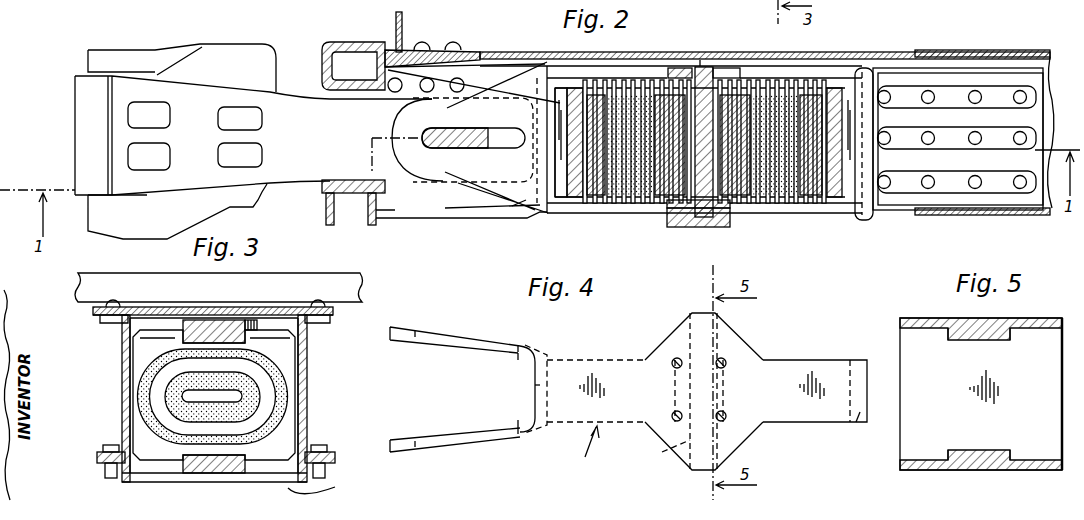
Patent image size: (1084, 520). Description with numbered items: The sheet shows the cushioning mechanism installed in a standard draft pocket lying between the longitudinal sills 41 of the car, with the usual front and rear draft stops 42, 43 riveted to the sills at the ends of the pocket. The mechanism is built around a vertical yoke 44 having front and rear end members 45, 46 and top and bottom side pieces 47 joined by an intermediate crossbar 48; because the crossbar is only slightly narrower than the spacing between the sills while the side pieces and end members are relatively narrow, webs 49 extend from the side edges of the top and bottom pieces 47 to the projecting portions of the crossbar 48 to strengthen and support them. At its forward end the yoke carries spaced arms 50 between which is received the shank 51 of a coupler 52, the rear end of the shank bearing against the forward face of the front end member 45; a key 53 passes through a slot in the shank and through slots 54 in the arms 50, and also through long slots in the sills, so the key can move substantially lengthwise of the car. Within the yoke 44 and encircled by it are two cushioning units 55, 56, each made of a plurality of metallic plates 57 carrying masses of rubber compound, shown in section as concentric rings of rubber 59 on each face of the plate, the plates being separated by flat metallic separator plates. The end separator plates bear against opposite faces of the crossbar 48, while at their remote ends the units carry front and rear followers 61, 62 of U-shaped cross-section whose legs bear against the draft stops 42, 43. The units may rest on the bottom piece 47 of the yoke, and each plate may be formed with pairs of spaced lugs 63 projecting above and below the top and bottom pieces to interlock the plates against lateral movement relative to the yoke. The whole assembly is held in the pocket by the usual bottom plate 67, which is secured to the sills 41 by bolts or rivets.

In FIG. 2, the longitudinal sills 41 is at (1045, 96).
In FIG. 3, the longitudinal sills 41 is at (122, 414).
In FIG. 2, the front draft stop 42 is at (547, 60).
In FIG. 2, the rear draft stop 43 is at (864, 72).
In FIG. 2, the vertical yoke 44 is at (536, 231).
In FIG. 4, the vertical yoke 44 is at (585, 450).
In FIG. 2, the front end member 45 is at (512, 207).
In FIG. 4, the front end member 45 is at (534, 385).
In FIG. 2, the rear end member 46 is at (866, 206).
In FIG. 4, the rear end member 46 is at (857, 425).
In FIG. 2, the side pieces 47 is at (612, 72).
In FIG. 3, the side pieces 47 is at (222, 322).
In FIG. 4, the side pieces 47 is at (628, 370).
In FIG. 5, the side pieces 47 is at (988, 330).
In FIG. 2, the crossbar 48 is at (690, 228).
In FIG. 4, the crossbar 48 is at (662, 452).
In FIG. 5, the crossbar 48 is at (981, 394).
In FIG. 2, the webs 49 is at (727, 72).
In FIG. 4, the webs 49 is at (737, 338).
In FIG. 5, the webs 49 is at (924, 330).
In FIG. 2, the spaced arms 50 is at (398, 120).
In FIG. 4, the spaced arms 50 is at (490, 332).
In FIG. 2, the shank 51 is at (322, 158).
In FIG. 2, the coupler 52 is at (253, 52).
In FIG. 2, the key 53 is at (345, 40).
In FIG. 2, the slots 54 is at (505, 50).
In FIG. 4, the slots 54 is at (518, 351).
In FIG. 2, the cushioning unit 55 is at (656, 78).
In FIG. 2, the cushioning unit 56 is at (790, 80).
In FIG. 3, the cushioning unit 56 is at (293, 370).
In FIG. 3, the metallic plates 57 is at (282, 440).
In FIG. 3, the concentric rings of rubber 59 is at (283, 394).
In FIG. 2, the front follower 61 is at (573, 200).
In FIG. 2, the rear follower 62 is at (834, 200).
In FIG. 3, the lugs 63 is at (160, 338).
In FIG. 2, the bottom plate 67 is at (705, 62).
In FIG. 3, the bottom plate 67 is at (335, 487).